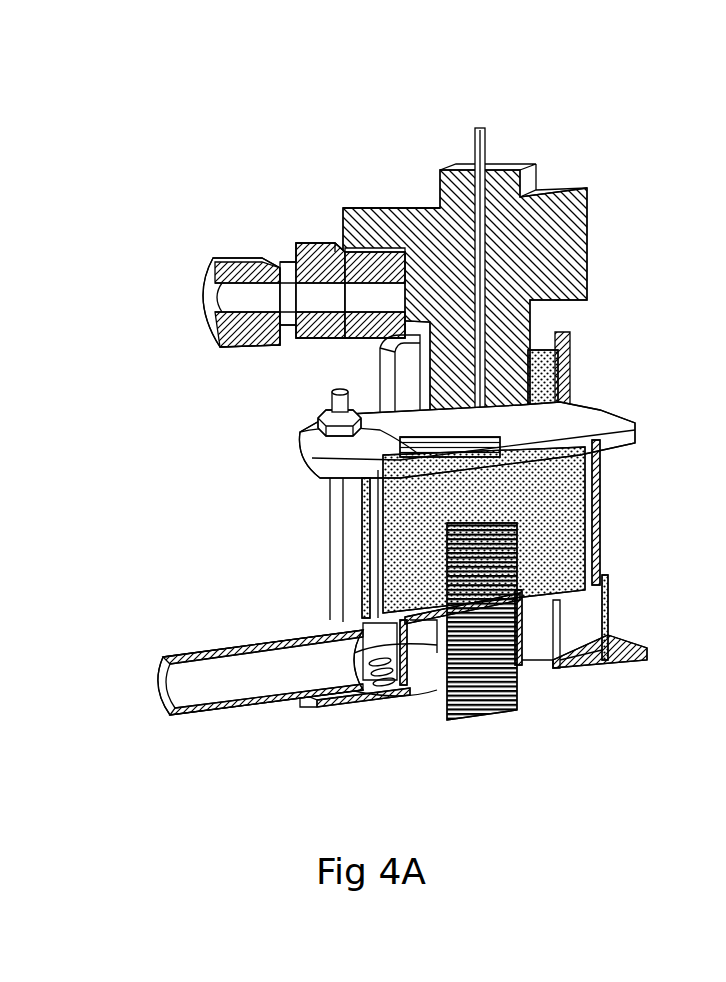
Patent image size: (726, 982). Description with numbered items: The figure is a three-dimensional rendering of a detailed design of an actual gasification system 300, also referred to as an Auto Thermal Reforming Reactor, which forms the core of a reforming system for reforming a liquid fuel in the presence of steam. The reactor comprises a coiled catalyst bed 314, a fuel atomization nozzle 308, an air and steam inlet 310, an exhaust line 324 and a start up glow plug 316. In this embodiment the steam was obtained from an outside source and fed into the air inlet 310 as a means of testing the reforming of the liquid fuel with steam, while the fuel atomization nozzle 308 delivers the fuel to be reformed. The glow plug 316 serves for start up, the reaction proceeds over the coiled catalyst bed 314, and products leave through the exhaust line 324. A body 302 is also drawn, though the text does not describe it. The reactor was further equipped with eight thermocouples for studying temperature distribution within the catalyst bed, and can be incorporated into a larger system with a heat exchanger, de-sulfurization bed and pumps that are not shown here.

The gasification system 300 is at (650, 76).
The valve body 302 is at (572, 238).
The fuel atomization nozzle 308 is at (478, 128).
The air and steam inlet 310 is at (222, 302).
The coiled catalyst bed 314 is at (562, 511).
The start up glow plug 316 is at (494, 703).
The exhaust line 324 is at (245, 668).